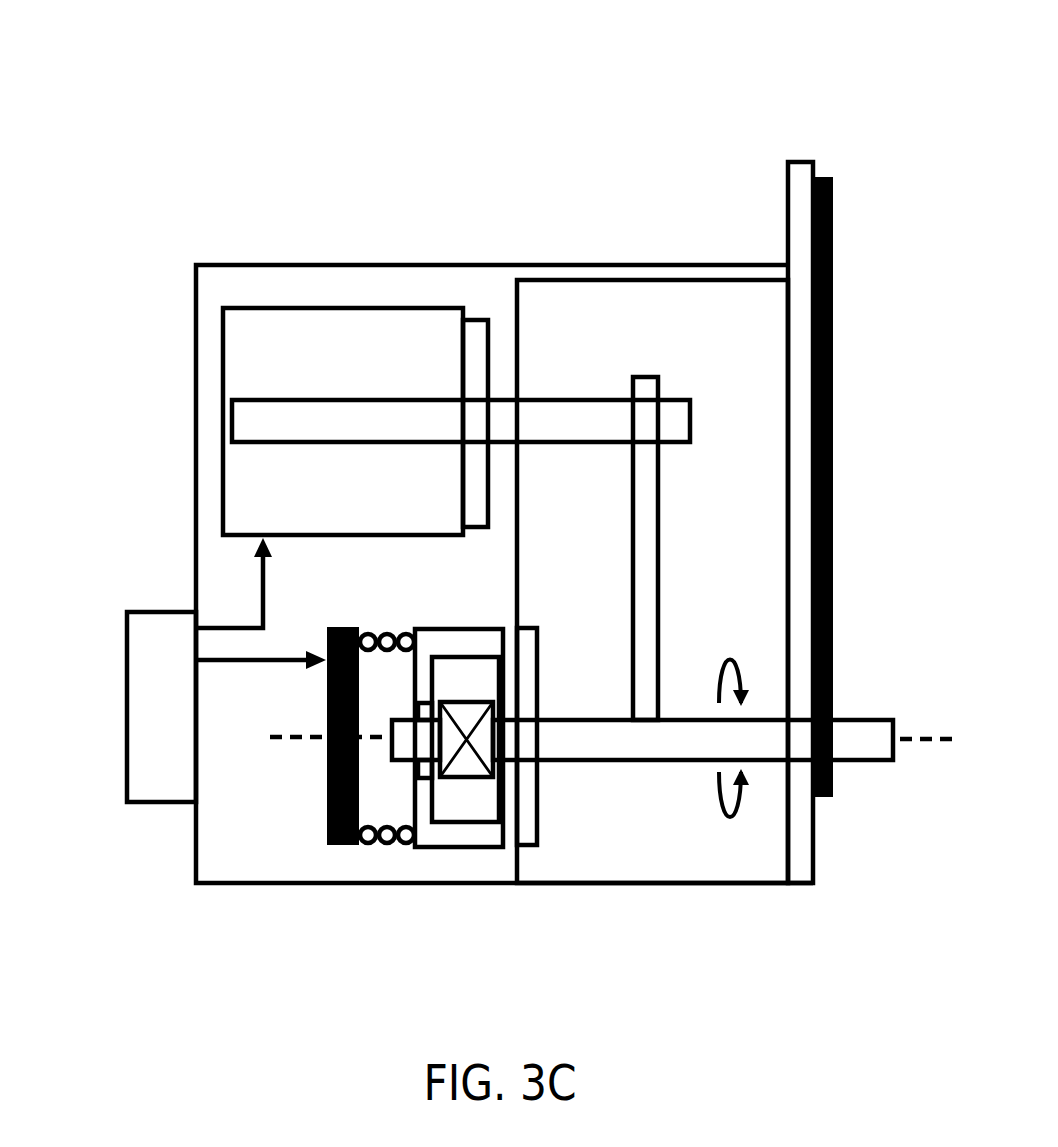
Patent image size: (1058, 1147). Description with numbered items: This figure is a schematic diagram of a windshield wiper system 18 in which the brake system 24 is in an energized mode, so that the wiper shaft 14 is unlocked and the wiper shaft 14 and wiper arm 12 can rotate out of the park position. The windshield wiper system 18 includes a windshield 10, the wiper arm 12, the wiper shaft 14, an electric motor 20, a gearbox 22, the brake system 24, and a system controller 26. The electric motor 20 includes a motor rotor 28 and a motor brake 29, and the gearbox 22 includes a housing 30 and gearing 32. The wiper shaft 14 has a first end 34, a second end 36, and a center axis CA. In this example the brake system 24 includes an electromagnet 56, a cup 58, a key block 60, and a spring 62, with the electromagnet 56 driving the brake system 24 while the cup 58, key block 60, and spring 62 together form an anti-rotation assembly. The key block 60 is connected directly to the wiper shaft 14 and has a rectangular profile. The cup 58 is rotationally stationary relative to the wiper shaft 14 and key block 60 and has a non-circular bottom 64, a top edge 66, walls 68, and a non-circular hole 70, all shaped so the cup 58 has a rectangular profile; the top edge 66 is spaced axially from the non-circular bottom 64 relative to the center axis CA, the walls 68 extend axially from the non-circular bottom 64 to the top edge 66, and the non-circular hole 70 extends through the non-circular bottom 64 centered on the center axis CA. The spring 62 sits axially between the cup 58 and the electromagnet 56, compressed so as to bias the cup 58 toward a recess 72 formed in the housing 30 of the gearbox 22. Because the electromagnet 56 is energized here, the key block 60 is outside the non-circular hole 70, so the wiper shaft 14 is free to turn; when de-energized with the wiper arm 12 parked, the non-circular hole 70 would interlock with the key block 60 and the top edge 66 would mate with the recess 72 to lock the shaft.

The windshield 10 is at (800, 159).
The wiper arm 12 is at (835, 285).
The wiper shaft 14 is at (812, 738).
The windshield wiper system 18 is at (236, 186).
The electric motor 20 is at (339, 350).
The gearbox 22 is at (712, 325).
The brake system 24 is at (360, 564).
The system controller 26 is at (153, 625).
The motor rotor 28 is at (536, 400).
The motor brake 29 is at (473, 337).
The housing 30 is at (745, 887).
The gearing 32 is at (648, 574).
The first end 34 is at (866, 738).
The second end 36 is at (403, 742).
The electromagnet 56 is at (327, 813).
The cup 58 is at (480, 798).
The key block 60 is at (480, 746).
The spring 62 is at (367, 835).
The non-circular bottom 64 is at (414, 800).
The top edge 66 is at (503, 828).
The walls 68 is at (483, 643).
The non-circular hole 70 is at (423, 700).
The recess 72 is at (527, 677).
The center axis CA is at (945, 738).